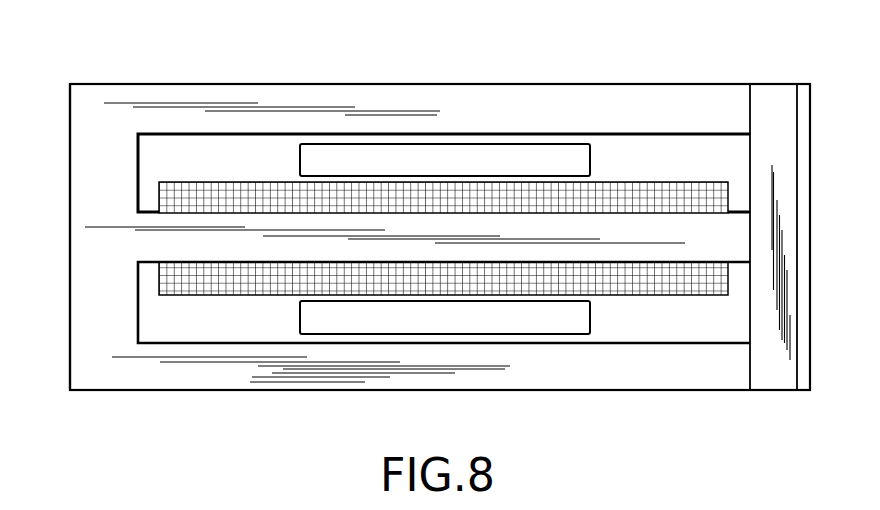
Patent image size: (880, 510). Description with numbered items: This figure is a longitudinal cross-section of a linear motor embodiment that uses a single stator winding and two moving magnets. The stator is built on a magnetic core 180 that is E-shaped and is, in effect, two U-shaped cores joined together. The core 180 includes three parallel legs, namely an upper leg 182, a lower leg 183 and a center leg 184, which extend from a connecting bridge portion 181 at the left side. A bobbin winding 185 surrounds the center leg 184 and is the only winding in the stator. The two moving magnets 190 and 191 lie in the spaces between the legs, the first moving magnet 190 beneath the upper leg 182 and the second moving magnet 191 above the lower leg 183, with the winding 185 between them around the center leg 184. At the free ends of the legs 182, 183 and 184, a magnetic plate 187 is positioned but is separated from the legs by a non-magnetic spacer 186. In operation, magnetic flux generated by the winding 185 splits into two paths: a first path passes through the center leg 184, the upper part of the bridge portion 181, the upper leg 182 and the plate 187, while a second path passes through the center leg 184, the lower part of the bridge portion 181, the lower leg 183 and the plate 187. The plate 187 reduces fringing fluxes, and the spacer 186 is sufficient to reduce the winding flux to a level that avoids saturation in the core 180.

The magnetic core 180 is at (107, 64).
The connecting bridge portion 181 is at (85, 133).
The outer leg 182 is at (538, 94).
The outer leg 183 is at (603, 382).
The center leg 184 is at (608, 221).
The bobbin winding 185 is at (622, 280).
The non-magnetic spacer 186 is at (763, 378).
The magnetic plate 187 is at (782, 288).
The moving magnet 190 is at (357, 156).
The moving magnet 191 is at (357, 325).